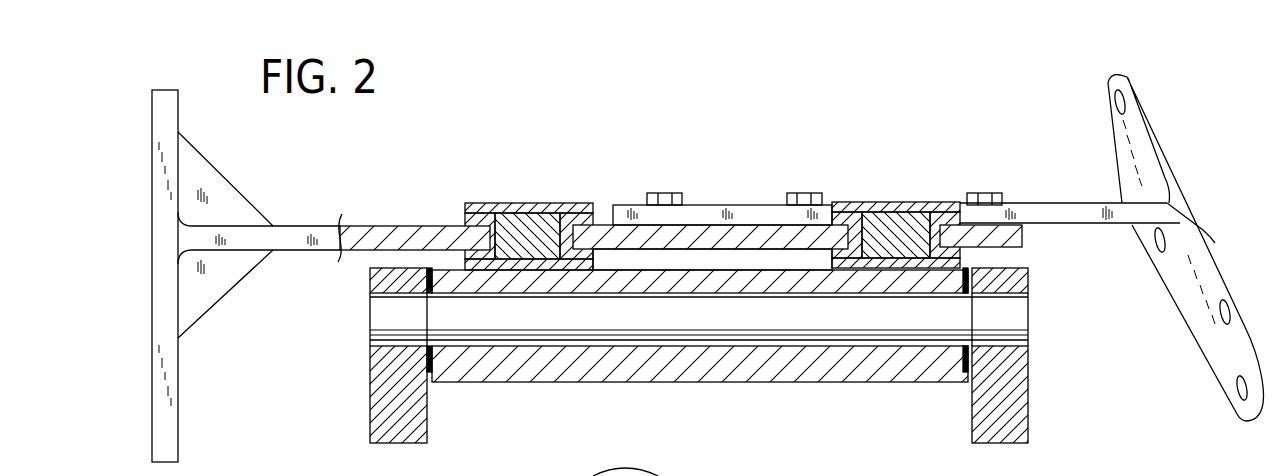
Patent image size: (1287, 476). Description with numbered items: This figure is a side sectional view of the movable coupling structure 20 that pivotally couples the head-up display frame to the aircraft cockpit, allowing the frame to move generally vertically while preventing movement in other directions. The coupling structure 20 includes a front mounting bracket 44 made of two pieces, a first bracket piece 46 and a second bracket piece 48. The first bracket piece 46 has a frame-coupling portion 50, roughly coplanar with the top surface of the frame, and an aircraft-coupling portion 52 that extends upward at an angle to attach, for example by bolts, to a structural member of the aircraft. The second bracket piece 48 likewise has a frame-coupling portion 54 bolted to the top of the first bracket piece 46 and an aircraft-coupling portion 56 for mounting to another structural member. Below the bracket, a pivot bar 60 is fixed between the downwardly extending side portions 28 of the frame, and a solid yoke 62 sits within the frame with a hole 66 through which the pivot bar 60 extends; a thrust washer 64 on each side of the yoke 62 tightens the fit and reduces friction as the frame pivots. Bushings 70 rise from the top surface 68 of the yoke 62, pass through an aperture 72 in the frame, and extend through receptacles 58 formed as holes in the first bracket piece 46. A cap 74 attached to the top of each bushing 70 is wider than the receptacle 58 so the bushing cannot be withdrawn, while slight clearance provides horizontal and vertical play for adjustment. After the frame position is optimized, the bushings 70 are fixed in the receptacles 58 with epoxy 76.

The movable coupling structure 20 is at (992, 103).
The side portions 28 is at (387, 380).
The front mounting bracket 44 is at (632, 196).
The first bracket piece 46 is at (368, 232).
The second bracket piece 48 is at (1063, 203).
The frame-coupling portion 50 is at (600, 222).
The aircraft-coupling portion 52 is at (168, 152).
The frame-coupling portion 54 is at (738, 210).
The aircraft-coupling portion 56 is at (1170, 158).
The receptacles 58 is at (486, 235).
The pivot bar 60 is at (657, 324).
The yoke 62 is at (540, 377).
The thrust washer 64 is at (432, 380).
The hole 66 is at (572, 345).
The top surface 68 is at (737, 273).
The bushings 70 is at (507, 218).
The aperture 72 is at (427, 268).
The cap 74 is at (537, 208).
The epoxy 76 is at (472, 212).